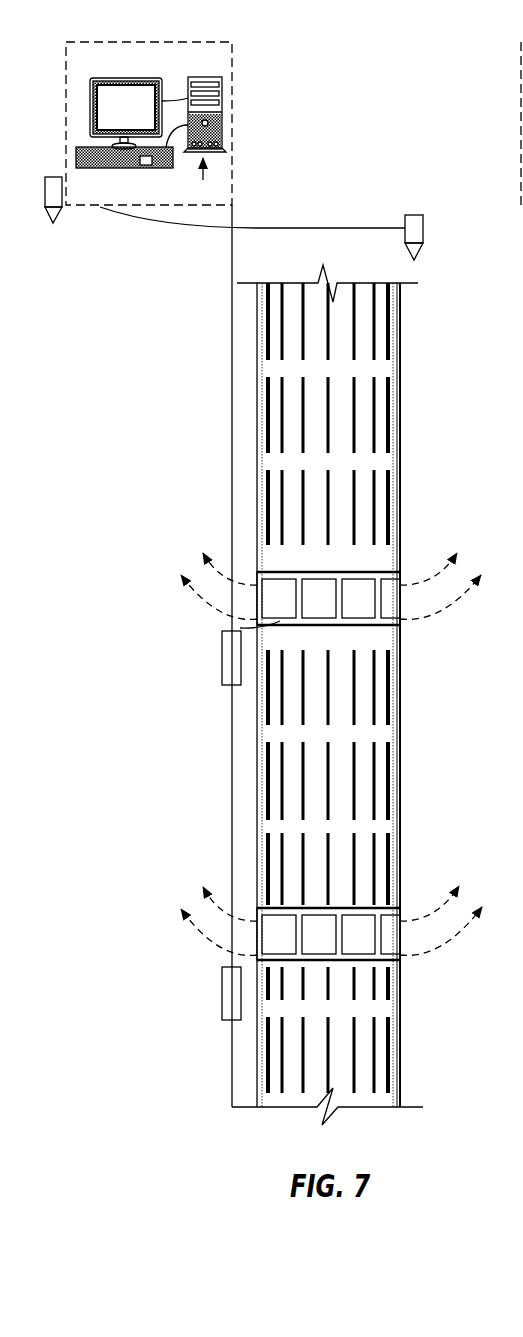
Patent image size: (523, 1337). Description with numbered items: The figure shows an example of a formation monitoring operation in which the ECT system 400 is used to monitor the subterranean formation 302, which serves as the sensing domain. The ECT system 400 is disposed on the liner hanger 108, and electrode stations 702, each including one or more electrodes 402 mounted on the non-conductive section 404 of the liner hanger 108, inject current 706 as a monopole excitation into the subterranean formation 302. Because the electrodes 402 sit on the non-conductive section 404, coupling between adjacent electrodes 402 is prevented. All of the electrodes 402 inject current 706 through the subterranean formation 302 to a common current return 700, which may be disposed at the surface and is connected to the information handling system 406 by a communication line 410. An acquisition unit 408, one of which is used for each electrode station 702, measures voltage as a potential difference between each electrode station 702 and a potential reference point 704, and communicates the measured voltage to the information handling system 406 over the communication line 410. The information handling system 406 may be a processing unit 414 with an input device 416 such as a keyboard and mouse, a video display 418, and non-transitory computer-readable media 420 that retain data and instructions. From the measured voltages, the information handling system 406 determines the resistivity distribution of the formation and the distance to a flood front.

The liner hanger 108 is at (388, 366).
The subterranean formation 302 is at (185, 643).
The ECT system 400 is at (142, 341).
The electrodes 402 is at (357, 602).
The non-conductive section 404 is at (388, 625).
The information handling system 406 is at (238, 122).
The acquisition unit 408 is at (222, 660).
The communication line 410 is at (232, 418).
The processing unit 414 is at (209, 77).
The input device 416 is at (130, 168).
The video display 418 is at (127, 78).
The non-transitory computer-readable media 420 is at (203, 178).
The common current return 700 is at (413, 215).
The electrode station 702 is at (251, 573).
The potential reference point 704 is at (58, 212).
The current 706 is at (442, 612).